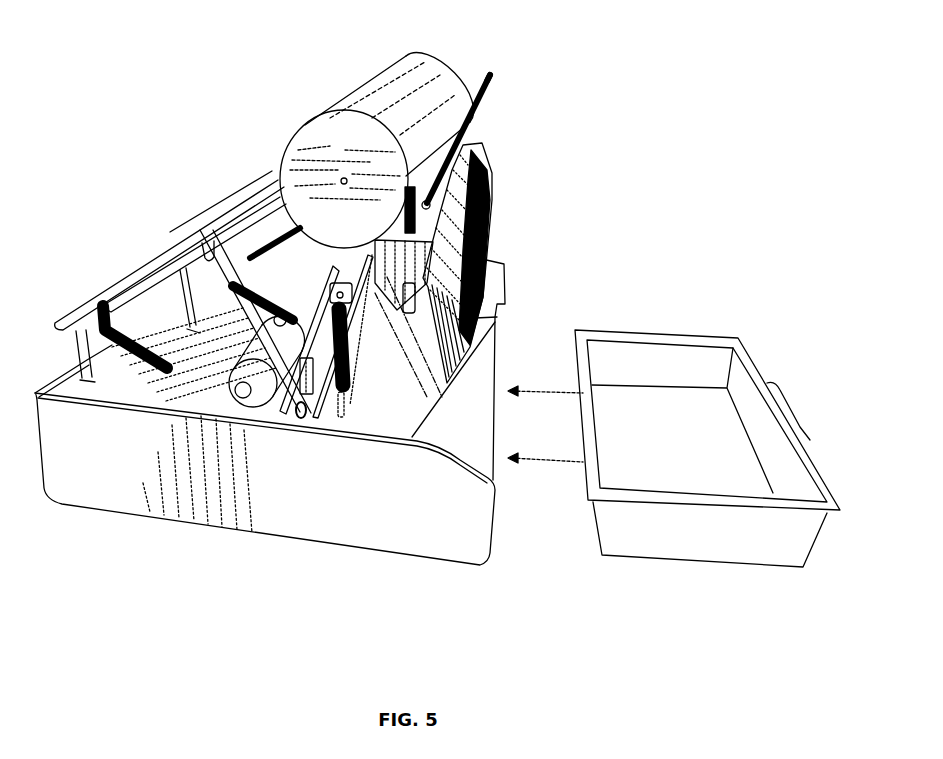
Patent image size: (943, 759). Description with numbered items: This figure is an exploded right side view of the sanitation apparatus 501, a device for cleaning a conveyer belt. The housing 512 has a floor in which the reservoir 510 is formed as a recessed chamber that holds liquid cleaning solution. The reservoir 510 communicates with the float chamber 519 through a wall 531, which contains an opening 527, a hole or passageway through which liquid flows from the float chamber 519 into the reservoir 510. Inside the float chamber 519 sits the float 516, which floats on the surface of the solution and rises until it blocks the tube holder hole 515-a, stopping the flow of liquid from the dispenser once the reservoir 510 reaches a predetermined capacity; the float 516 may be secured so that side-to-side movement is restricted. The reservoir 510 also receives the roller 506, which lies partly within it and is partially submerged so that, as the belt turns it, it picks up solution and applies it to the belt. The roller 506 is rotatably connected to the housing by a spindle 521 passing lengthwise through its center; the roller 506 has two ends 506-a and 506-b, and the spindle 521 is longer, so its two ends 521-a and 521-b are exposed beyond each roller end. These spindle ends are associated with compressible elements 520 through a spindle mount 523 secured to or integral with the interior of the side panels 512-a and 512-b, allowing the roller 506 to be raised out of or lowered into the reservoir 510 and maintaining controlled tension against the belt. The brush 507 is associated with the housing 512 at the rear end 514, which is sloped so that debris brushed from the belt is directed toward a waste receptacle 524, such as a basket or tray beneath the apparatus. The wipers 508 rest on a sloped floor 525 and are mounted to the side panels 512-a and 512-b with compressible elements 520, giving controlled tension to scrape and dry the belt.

The sanitation apparatus 501 is at (158, 139).
The roller 506 is at (335, 107).
The roller end 506-a is at (437, 52).
The roller end 506-b is at (305, 136).
The brush 507 is at (490, 160).
The wipers 508 is at (203, 248).
The reservoir 510 is at (379, 410).
The housing 512 is at (210, 538).
The side panel 512-a is at (420, 528).
The side panel 512-b is at (506, 262).
The rear end 514 is at (484, 355).
The tube holder hole 515-a is at (293, 378).
The float 516 is at (240, 371).
The float chamber 519 is at (276, 415).
The compressible elements 520 is at (130, 360).
The spindle 521 is at (480, 106).
The spindle end 521-a is at (489, 70).
The spindle end 521-b is at (430, 206).
The spindle mount 523 is at (347, 300).
The waste receptacle 524 is at (672, 335).
The sloped floor 525 is at (145, 382).
The opening 527 is at (301, 421).
The wall 531 is at (319, 382).